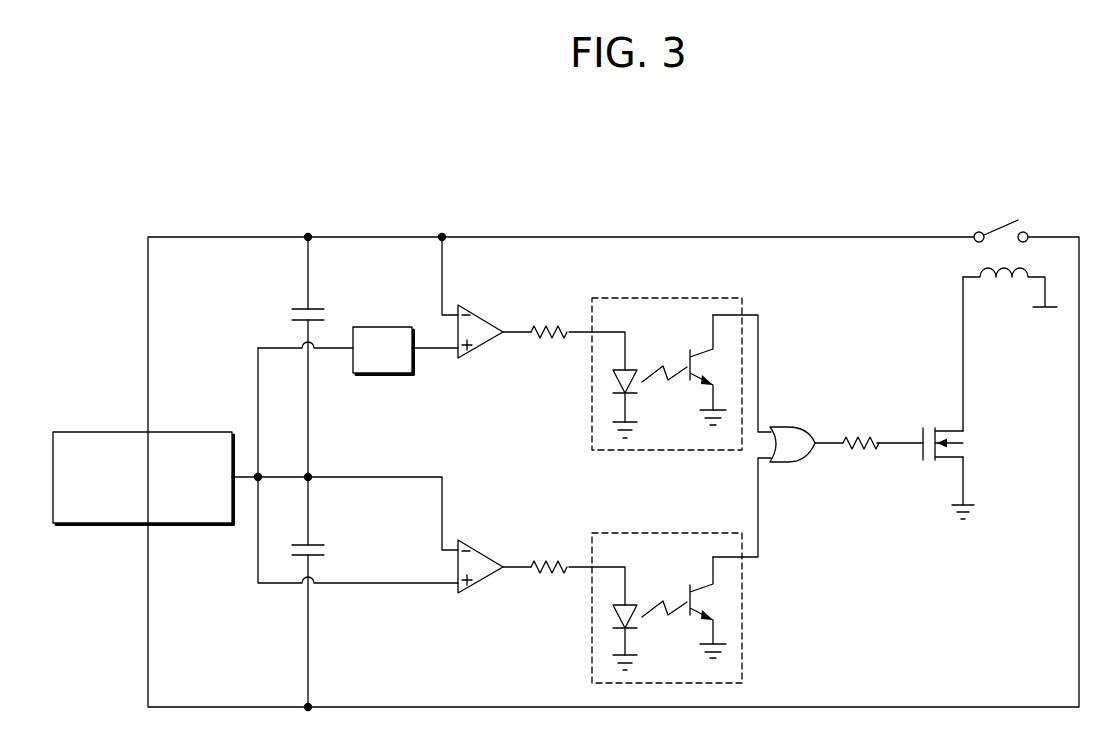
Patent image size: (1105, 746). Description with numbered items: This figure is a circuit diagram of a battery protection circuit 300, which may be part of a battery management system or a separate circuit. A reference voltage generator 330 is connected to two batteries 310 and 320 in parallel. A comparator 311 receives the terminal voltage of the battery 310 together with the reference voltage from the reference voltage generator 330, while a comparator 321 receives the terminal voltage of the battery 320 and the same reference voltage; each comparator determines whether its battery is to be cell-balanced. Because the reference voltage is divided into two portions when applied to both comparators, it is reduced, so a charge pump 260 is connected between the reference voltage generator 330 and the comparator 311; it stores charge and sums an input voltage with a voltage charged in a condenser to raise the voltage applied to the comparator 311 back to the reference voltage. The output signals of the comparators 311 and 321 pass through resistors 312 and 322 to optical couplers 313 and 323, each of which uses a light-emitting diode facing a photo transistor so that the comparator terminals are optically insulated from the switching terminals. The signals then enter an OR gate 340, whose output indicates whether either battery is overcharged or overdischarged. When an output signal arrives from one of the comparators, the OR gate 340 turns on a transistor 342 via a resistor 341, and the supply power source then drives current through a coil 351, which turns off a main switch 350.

The battery protection circuit 300 is at (771, 163).
The charge pump 260 is at (385, 377).
The battery 310 is at (322, 309).
The comparator 311 is at (475, 313).
The resistor 312 is at (552, 318).
The optical coupler 313 is at (673, 303).
The battery 320 is at (322, 543).
The comparator 321 is at (477, 545).
The resistor 322 is at (552, 553).
The optical coupler 323 is at (677, 532).
The reference voltage generator 330 is at (177, 430).
The OR gate 340 is at (790, 423).
The resistor 341 is at (863, 431).
The transistor 342 is at (937, 430).
The main switch 350 is at (995, 223).
The coil 351 is at (1013, 305).